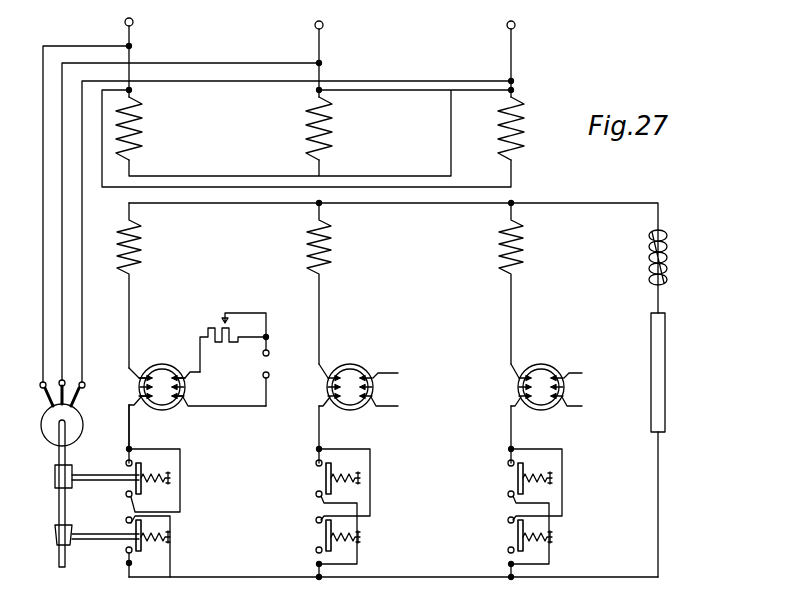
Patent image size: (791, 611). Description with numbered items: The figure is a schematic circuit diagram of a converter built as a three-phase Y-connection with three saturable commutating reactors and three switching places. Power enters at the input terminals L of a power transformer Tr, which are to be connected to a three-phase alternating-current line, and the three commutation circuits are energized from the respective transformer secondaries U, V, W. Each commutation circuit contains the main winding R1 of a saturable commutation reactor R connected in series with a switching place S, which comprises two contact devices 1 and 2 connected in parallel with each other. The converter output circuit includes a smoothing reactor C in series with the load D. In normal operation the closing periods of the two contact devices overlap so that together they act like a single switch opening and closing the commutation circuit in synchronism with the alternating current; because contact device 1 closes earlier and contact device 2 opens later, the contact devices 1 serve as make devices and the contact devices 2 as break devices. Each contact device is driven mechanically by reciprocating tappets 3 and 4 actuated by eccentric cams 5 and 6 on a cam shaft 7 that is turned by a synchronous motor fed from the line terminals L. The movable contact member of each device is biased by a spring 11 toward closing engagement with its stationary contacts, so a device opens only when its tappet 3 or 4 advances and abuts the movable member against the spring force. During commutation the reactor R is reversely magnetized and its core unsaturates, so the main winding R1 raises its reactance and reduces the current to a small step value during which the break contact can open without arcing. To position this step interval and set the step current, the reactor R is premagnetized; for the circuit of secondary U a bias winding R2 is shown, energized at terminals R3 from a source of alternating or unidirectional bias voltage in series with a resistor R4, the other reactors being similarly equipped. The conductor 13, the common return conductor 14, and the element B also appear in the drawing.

The input terminals L is at (288, 198).
The power transformer Tr is at (313, 138).
The transformer secondary U is at (138, 285).
The transformer secondary V is at (328, 283).
The transformer secondary W is at (523, 283).
The smoothing reactor C is at (666, 271).
The load D is at (665, 352).
The saturable commutation reactor R is at (162, 366).
The main winding R1 is at (126, 387).
The bias winding R2 is at (195, 387).
The terminals R3 is at (278, 373).
The resistor R4 is at (232, 339).
The bimetal thermostat B is at (84, 420).
The switching place S is at (114, 514).
The contact device 1 is at (141, 466).
The contact device 2 is at (140, 553).
The reciprocating tappet 3 is at (88, 474).
The reciprocating tappet 4 is at (88, 540).
The eccentric cam 5 is at (55, 478).
The eccentric cam 6 is at (56, 536).
The cam shaft 7 is at (59, 456).
The spring 11 is at (156, 480).
The conductor 13 is at (139, 427).
The common return conductor 14 is at (393, 568).